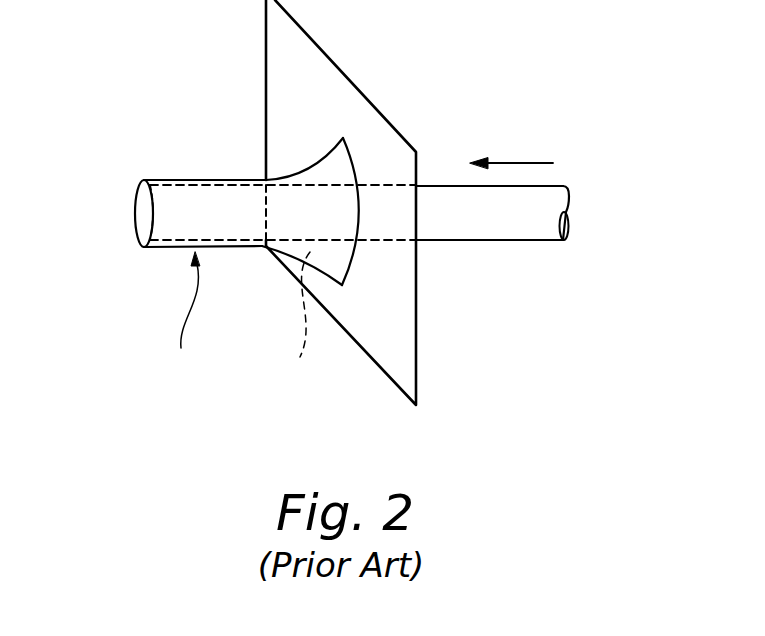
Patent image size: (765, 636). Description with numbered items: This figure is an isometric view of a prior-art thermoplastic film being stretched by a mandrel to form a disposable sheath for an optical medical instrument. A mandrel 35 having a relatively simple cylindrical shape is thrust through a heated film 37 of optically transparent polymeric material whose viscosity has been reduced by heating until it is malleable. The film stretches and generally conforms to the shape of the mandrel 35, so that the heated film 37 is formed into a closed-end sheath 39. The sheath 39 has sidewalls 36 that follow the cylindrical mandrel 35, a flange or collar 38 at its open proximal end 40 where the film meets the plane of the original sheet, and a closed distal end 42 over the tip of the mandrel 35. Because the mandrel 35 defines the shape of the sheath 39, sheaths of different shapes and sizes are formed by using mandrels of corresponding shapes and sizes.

The mandrel 35 is at (437, 197).
The sidewalls 36 is at (217, 247).
The heated film 37 is at (322, 67).
The flange or collar 38 is at (327, 273).
The closed-end sheath 39 is at (184, 315).
The open proximal end 40 is at (290, 319).
The closed distal end 42 is at (136, 221).